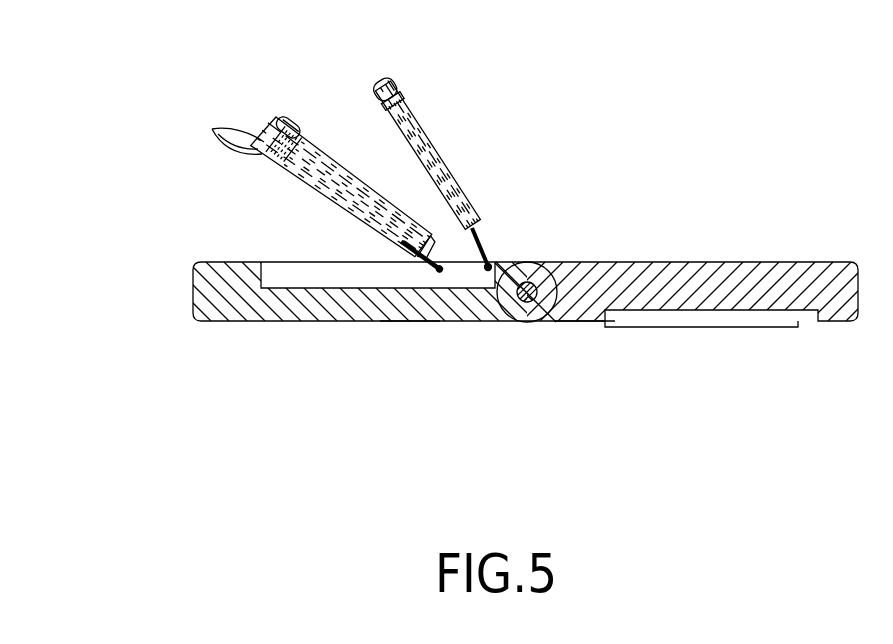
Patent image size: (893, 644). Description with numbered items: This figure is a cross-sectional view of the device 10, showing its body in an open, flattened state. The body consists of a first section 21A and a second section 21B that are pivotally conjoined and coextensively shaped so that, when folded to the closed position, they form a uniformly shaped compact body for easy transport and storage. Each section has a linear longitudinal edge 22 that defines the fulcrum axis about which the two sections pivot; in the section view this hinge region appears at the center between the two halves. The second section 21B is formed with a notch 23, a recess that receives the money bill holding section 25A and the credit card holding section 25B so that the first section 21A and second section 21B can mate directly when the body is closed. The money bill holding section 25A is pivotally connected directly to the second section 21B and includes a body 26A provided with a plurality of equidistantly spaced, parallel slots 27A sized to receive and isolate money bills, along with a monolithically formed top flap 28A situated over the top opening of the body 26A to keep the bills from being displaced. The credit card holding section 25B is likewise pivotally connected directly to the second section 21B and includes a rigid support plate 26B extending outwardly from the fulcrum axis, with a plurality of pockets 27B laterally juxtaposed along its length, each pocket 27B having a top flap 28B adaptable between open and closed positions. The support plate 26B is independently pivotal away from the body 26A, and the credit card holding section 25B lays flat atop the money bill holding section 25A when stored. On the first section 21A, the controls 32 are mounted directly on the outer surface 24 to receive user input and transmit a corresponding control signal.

The device 10 is at (196, 82).
The first section 21A is at (700, 285).
The second section 21B is at (326, 305).
The linear longitudinal edge 22 is at (527, 303).
The notch 23 is at (336, 278).
The outer surface 24 is at (413, 322).
The money bill holding section 25A is at (277, 170).
The credit card holding section 25B is at (392, 86).
The body 26A is at (348, 168).
The rigid support plate 26B is at (476, 236).
The slots 27A is at (203, 132).
The pockets 27B is at (428, 151).
The top flap 28A is at (282, 118).
The top flap 28B is at (402, 100).
The controls 32 is at (760, 328).